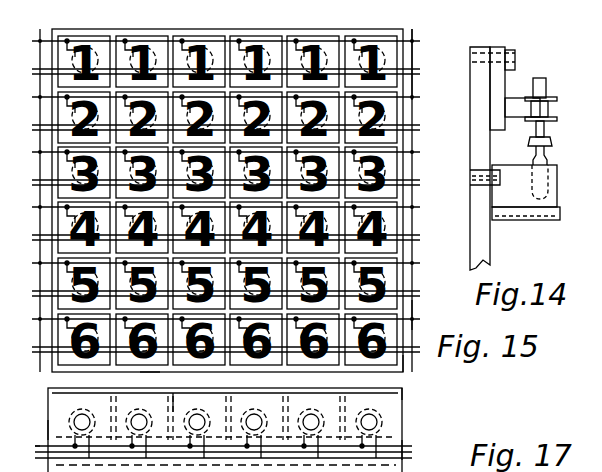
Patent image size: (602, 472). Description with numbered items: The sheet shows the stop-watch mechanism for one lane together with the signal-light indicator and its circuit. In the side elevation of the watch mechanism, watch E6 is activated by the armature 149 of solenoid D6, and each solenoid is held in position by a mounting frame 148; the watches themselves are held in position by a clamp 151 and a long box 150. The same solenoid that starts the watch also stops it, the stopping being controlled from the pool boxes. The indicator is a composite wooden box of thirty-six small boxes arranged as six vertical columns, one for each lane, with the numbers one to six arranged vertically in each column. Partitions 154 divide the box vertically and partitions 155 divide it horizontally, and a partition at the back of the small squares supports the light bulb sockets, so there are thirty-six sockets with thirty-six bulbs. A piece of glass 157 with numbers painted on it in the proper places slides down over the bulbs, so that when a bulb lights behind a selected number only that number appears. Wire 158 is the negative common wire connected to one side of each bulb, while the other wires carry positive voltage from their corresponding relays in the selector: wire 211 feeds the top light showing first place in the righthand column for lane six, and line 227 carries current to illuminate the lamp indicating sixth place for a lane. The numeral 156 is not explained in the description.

In FIG. 15, the wire 211 is at (416, 72).
In FIG. 15, the partitions 155 is at (418, 316).
In FIG. 15, the wire 158 is at (415, 374).
In FIG. 17, the wire 158 is at (412, 447).
In FIG. 15, the line 227 is at (160, 366).
In FIG. 17, the piece of glass 157 is at (406, 396).
In FIG. 17, the partitions 154 is at (174, 392).
In FIG. 17, the lamp 156 is at (46, 430).
In FIG. 14, the mounting frame 148 is at (508, 84).
In FIG. 14, the solenoid D6 is at (546, 104).
In FIG. 14, the armature 149 is at (552, 142).
In FIG. 14, the long box 150 is at (510, 172).
In FIG. 14, the watch E6 is at (550, 177).
In FIG. 14, the clamp 151 is at (520, 222).